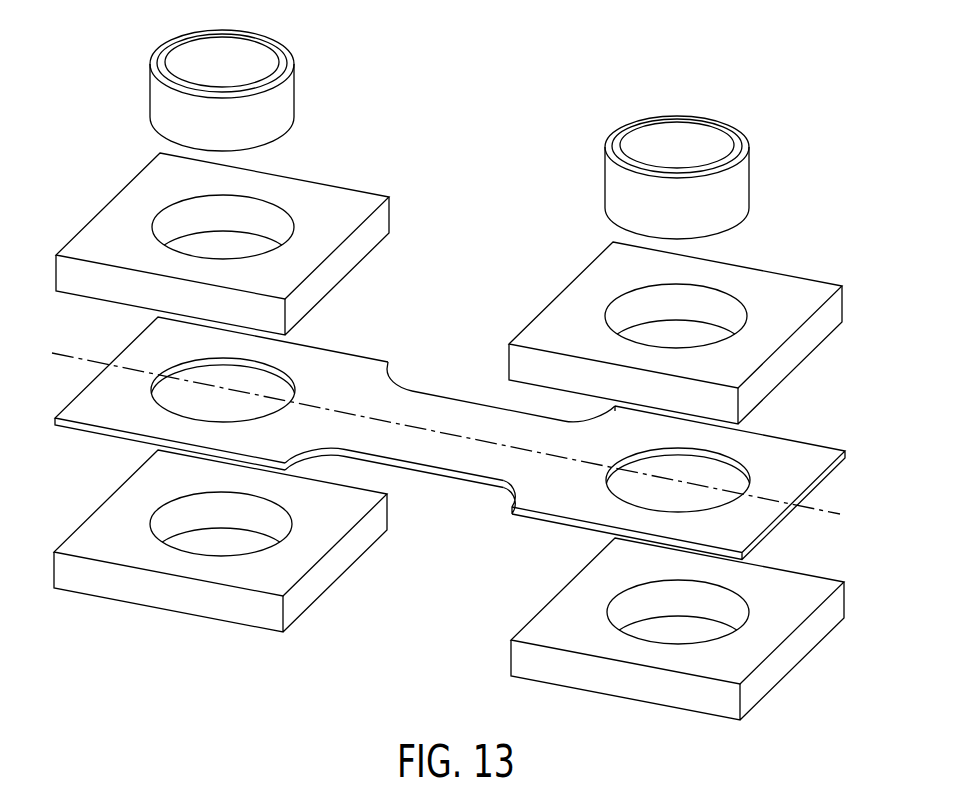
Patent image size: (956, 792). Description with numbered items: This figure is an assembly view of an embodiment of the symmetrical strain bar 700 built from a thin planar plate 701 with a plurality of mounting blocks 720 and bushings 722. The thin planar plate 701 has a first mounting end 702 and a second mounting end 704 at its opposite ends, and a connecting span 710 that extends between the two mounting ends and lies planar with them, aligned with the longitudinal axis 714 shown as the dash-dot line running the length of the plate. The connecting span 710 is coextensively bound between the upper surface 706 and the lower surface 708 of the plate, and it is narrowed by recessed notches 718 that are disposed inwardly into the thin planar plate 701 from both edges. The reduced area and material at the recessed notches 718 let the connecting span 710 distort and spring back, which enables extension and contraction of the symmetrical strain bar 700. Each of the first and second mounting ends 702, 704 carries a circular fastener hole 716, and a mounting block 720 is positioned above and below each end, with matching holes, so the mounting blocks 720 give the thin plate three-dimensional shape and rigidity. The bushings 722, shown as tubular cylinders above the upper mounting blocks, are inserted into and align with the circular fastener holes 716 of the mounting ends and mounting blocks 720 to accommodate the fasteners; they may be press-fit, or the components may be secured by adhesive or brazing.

The symmetrical strain bar 700 is at (545, 88).
The thin planar plate 701 is at (75, 432).
The first mounting end 702 is at (92, 395).
The second mounting end 704 is at (805, 460).
The upper surface 706 is at (335, 378).
The lower surface 708 is at (408, 480).
The connecting span 710 is at (410, 407).
The longitudinal axis 714 is at (835, 508).
The circular fastener holes 716 is at (266, 222).
The recessed notches 718 is at (470, 370).
The mounting blocks 720 is at (122, 213).
The bushings 722 is at (285, 110).